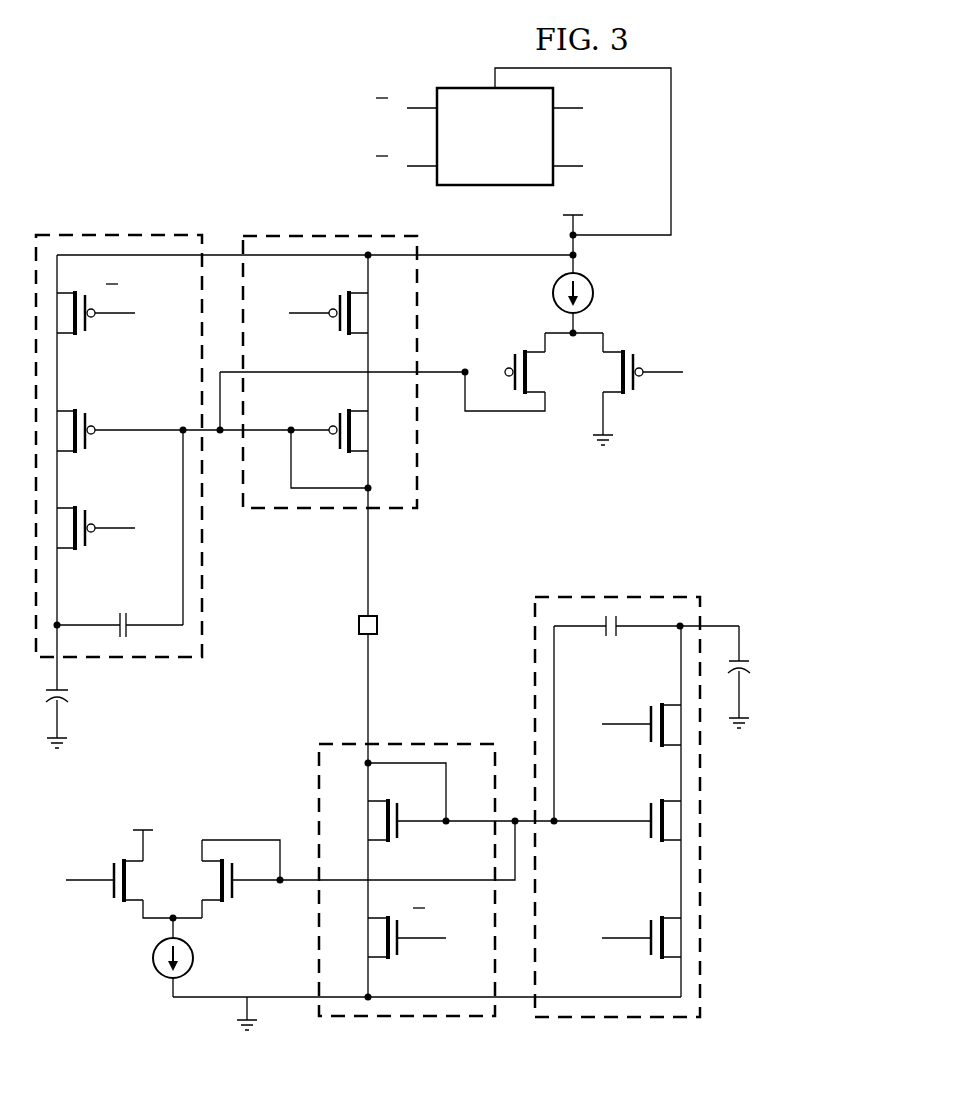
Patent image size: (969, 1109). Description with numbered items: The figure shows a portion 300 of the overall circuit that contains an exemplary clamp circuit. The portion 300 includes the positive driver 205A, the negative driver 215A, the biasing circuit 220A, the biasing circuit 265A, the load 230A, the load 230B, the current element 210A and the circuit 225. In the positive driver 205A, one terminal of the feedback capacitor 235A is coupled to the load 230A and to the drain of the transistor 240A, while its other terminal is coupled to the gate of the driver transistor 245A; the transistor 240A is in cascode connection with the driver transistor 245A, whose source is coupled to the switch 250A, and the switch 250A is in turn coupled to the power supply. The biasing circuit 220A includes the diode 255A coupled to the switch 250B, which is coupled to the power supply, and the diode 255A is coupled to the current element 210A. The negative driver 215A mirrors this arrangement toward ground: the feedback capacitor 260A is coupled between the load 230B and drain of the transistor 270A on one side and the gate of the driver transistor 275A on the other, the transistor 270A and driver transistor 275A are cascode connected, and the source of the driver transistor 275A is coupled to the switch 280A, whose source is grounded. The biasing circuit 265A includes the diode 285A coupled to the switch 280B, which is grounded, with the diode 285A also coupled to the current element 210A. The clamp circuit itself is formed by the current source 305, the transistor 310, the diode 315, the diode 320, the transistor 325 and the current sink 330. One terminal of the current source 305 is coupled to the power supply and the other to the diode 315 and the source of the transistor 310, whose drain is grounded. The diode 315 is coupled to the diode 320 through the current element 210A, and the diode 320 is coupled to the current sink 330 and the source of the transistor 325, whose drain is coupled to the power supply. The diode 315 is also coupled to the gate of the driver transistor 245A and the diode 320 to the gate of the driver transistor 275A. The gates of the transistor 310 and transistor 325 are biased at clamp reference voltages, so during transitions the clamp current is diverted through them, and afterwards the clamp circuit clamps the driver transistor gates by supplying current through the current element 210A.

The portion 300 is at (228, 136).
The positive driver 205A is at (86, 235).
The biasing circuit 220A is at (319, 236).
The circuit 225 is at (514, 149).
The current source 305 is at (597, 296).
The diode 315 is at (509, 365).
The transistor 310 is at (640, 365).
The switch 250A is at (94, 323).
The switch 250B is at (328, 323).
The driver transistor 245A is at (94, 426).
The diode 255A is at (328, 426).
The transistor 240A is at (94, 524).
The feedback capacitor 235A is at (122, 612).
The load 230A is at (70, 696).
The current element 210A is at (357, 626).
The feedback capacitor 260A is at (611, 640).
The load 230B is at (752, 670).
The transistor 270A is at (648, 735).
The driver transistor 275A is at (648, 832).
The diode 285A is at (401, 832).
The switch 280B is at (401, 950).
The switch 280A is at (648, 950).
The transistor 325 is at (108, 890).
The diode 320 is at (240, 890).
The current sink 330 is at (150, 956).
The biasing circuit 265A is at (419, 1018).
The negative driver 215A is at (650, 1018).